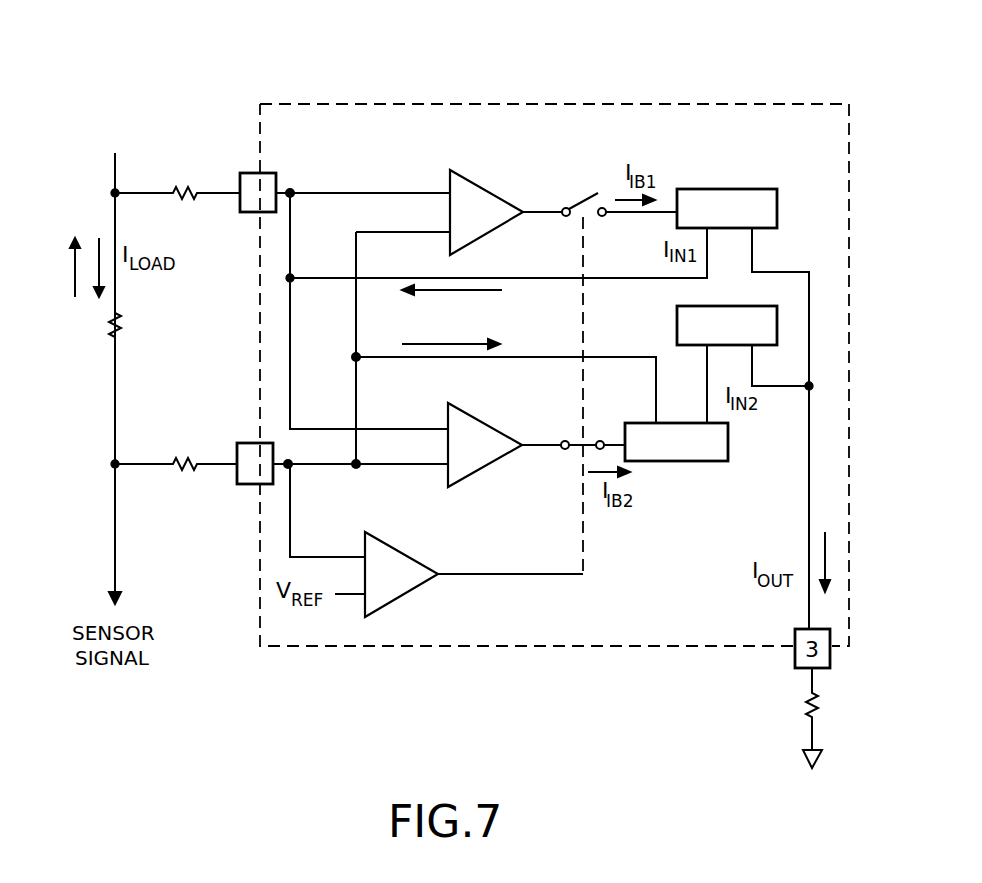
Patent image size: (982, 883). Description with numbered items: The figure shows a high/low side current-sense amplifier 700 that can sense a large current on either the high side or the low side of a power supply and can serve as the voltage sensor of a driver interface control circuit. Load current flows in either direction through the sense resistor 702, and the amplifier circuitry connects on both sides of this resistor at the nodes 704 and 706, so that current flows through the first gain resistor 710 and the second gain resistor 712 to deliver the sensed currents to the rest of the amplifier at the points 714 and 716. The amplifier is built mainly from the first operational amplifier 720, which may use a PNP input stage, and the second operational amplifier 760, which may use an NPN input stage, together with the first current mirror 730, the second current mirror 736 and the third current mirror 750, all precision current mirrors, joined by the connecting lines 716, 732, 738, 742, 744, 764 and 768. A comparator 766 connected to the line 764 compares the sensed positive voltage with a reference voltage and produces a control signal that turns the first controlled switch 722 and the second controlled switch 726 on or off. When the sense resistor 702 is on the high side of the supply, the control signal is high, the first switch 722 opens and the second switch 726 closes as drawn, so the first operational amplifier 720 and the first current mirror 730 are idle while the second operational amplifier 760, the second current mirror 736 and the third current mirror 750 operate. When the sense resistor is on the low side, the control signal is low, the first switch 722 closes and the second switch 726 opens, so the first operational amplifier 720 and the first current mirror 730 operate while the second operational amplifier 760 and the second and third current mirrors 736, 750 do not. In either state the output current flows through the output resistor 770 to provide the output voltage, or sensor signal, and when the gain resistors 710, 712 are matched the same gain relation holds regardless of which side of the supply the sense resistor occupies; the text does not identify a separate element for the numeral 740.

The current-sense amplifier 700 is at (95, 130).
The sense resistor 702 is at (110, 333).
The node 704 is at (115, 193).
The node 706 is at (115, 464).
The resistor RG1 710 is at (198, 188).
The resistor RG2 712 is at (198, 458).
The point 714 is at (277, 174).
The point 716 is at (290, 222).
The operational amplifier OP1 720 is at (478, 176).
The controlled switch K1 722 is at (597, 192).
The controlled switch K2 726 is at (564, 450).
The current mirror CM1 730 is at (762, 189).
The connecting line 732 is at (603, 278).
The current mirror CM2 736 is at (777, 325).
The connecting line 738 is at (752, 250).
The connection from CM2 to CM3 740 is at (728, 418).
The connecting line 742 is at (800, 386).
The connecting line 744 is at (517, 357).
The current mirror CM3 750 is at (725, 463).
The operational amplifier OP2 760 is at (493, 414).
The connecting line 764 is at (310, 466).
The comparator 766 is at (410, 548).
The connecting line 768 is at (500, 575).
The output resistor 770 is at (807, 713).